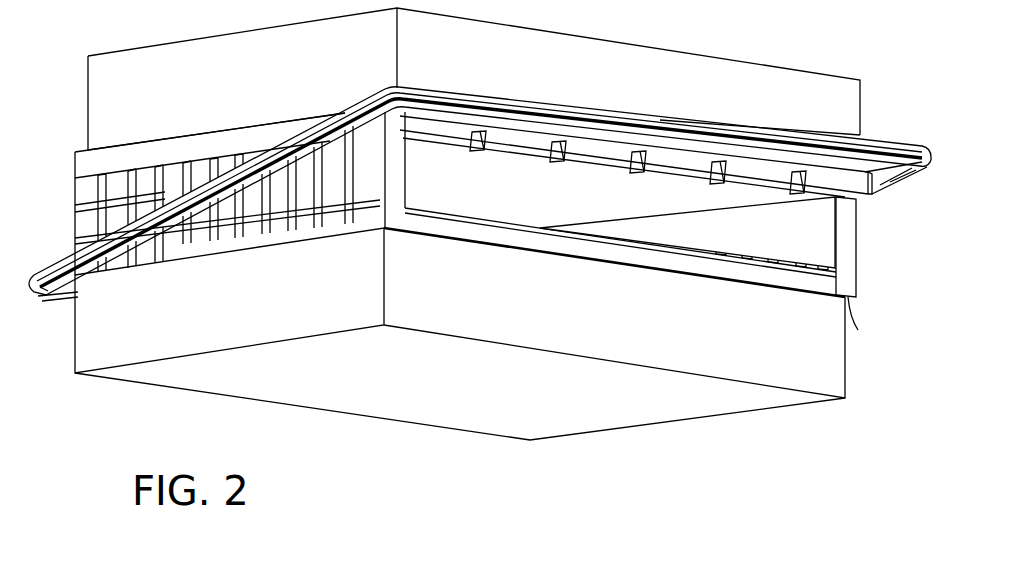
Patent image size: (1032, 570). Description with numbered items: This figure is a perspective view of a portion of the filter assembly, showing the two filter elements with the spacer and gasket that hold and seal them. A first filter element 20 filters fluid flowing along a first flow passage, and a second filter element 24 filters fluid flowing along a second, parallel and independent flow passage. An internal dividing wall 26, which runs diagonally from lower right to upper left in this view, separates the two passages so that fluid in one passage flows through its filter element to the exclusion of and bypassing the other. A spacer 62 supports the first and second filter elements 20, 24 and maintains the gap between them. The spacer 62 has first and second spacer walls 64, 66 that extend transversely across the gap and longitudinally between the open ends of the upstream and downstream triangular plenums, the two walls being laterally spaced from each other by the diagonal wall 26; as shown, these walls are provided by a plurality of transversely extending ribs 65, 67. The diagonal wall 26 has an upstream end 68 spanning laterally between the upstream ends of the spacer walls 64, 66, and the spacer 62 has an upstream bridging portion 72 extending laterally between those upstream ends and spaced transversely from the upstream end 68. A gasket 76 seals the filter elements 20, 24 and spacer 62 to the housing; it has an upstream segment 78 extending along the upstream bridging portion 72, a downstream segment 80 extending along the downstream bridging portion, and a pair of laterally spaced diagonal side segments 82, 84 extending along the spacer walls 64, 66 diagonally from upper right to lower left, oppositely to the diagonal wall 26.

The first filter element 20 is at (123, 350).
The second filter element 24 is at (102, 85).
The internal dividing wall 26 is at (182, 163).
The spacer 62 is at (850, 302).
The first spacer wall 64 is at (856, 258).
The transversely extending ribs 65 is at (788, 238).
The second spacer wall 66 is at (75, 193).
The transversely extending ribs 67 is at (130, 216).
The upstream end of diagonal wall 68 is at (648, 240).
The upstream bridging portion 72 is at (583, 163).
The gasket 76 is at (33, 280).
The upstream segment 78 is at (532, 105).
The downstream segment 80 is at (67, 293).
The diagonal side segment 82 is at (908, 178).
The diagonal side segment 84 is at (307, 140).